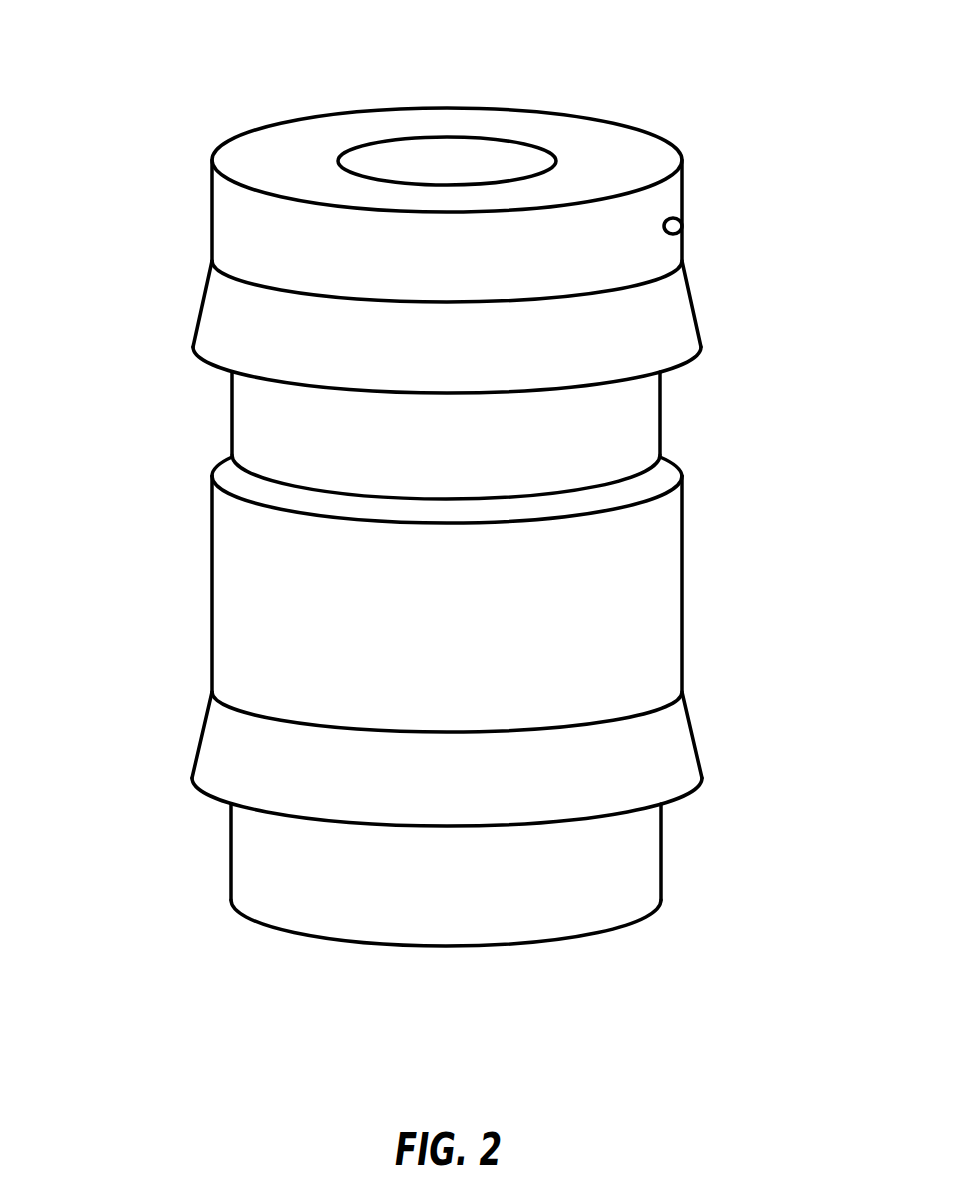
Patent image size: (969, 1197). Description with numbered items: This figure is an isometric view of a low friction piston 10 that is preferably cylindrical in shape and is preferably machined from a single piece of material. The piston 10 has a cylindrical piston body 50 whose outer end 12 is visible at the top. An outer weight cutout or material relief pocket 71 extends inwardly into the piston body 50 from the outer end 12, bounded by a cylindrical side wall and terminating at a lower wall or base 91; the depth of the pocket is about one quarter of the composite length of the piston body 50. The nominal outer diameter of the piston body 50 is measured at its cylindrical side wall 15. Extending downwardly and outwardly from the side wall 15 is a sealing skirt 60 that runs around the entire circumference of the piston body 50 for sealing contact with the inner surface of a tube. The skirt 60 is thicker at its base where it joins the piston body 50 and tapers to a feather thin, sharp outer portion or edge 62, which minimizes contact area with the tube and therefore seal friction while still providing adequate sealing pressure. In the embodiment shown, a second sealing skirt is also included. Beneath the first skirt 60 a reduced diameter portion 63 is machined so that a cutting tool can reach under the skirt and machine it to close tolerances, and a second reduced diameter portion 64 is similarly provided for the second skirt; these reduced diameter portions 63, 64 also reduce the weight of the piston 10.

The low friction piston 10 is at (152, 110).
The outer end 12 is at (625, 162).
The cylindrical side wall 15 is at (682, 230).
The piston body 50 is at (683, 559).
The sealing skirt 60 is at (203, 297).
The outer portion 62 is at (700, 344).
The reduced diameter portion 63 is at (640, 430).
The second reduced diameter portion 64 is at (643, 860).
The outer material relief pocket 71 is at (491, 163).
The base 91 is at (468, 178).